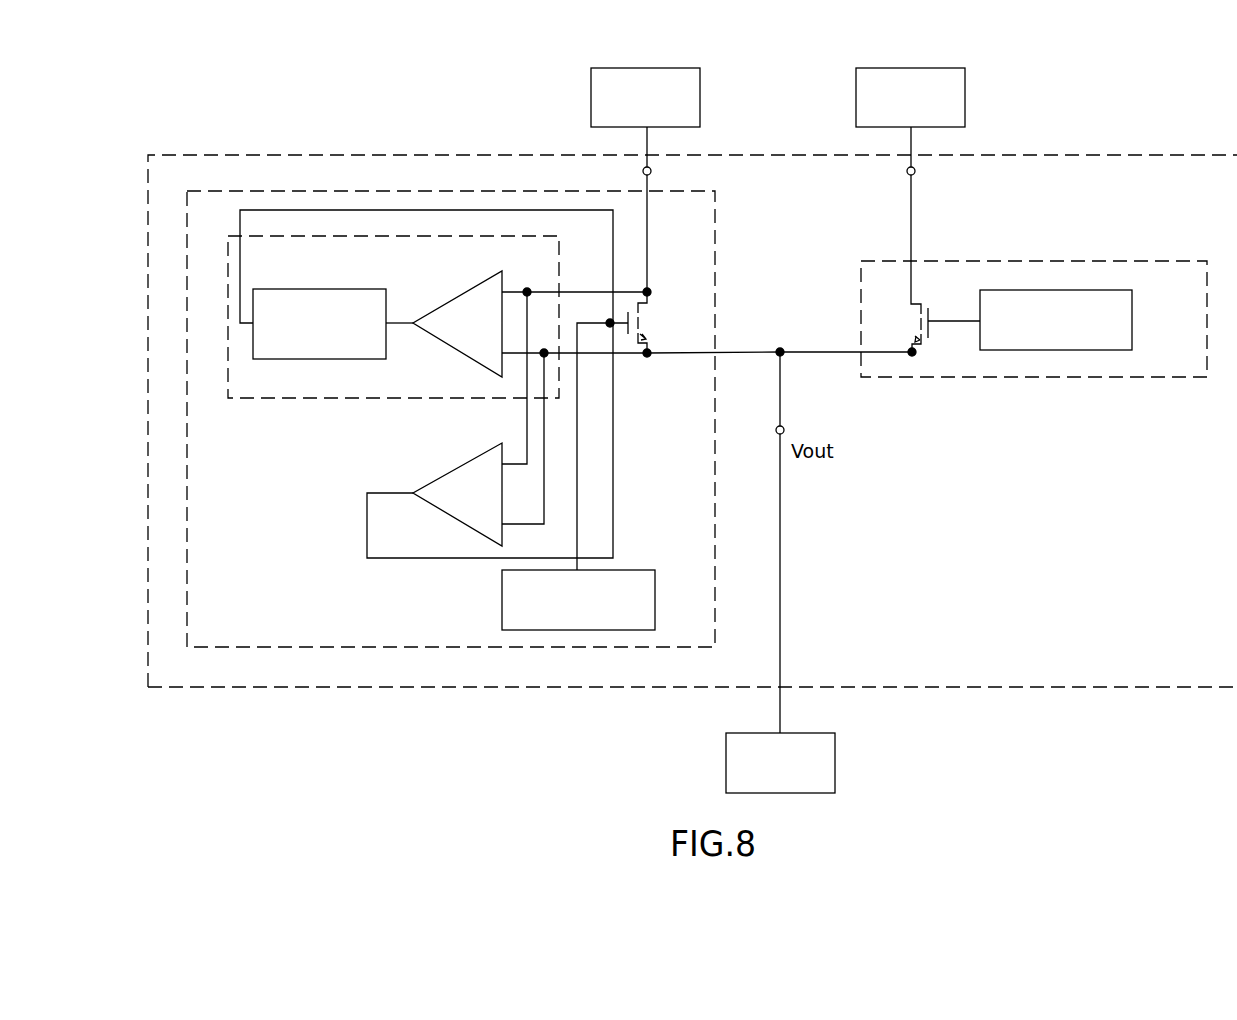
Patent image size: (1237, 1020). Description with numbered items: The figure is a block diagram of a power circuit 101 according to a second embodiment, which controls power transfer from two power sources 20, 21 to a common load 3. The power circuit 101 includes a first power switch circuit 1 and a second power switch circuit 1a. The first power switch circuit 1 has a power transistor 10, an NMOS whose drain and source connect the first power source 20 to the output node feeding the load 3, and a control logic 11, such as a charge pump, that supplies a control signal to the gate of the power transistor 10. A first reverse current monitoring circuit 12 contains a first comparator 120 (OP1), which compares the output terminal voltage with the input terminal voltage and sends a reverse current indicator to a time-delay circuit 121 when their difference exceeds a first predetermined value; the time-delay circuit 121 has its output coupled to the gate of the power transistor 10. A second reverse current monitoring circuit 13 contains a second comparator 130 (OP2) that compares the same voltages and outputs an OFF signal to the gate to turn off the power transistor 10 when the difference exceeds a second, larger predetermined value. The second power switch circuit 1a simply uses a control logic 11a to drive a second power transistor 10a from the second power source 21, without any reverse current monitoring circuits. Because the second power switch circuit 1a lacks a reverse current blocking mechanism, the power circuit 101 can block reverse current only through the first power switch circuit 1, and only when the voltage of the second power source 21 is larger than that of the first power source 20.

The power circuit 101 is at (806, 42).
The first power switch circuit 1 is at (343, 187).
The second power switch circuit 1a is at (1152, 240).
The power transistor 10 is at (635, 366).
The power transistor 10a is at (928, 360).
The control logic 11 is at (520, 632).
The control logic 11a is at (1112, 350).
The first reverse current monitoring circuit 12 is at (285, 405).
The first comparator 120 is at (455, 345).
The time-delay circuit 121 is at (330, 360).
The second reverse current monitoring circuit 13 is at (421, 537).
The second comparator 130 is at (455, 468).
The first power source 20 is at (591, 97).
The second power source 21 is at (965, 95).
The load 3 is at (835, 765).